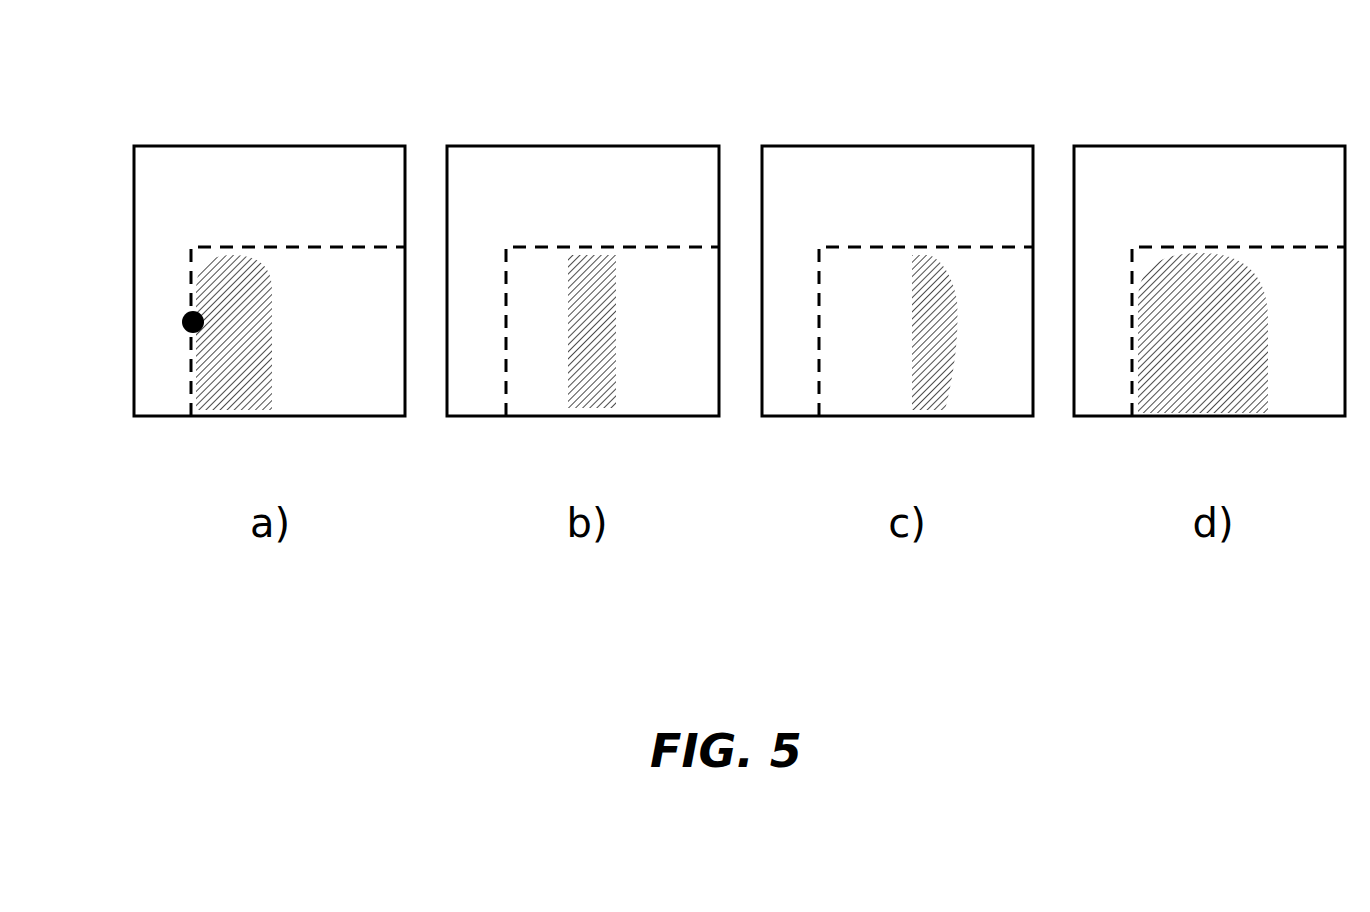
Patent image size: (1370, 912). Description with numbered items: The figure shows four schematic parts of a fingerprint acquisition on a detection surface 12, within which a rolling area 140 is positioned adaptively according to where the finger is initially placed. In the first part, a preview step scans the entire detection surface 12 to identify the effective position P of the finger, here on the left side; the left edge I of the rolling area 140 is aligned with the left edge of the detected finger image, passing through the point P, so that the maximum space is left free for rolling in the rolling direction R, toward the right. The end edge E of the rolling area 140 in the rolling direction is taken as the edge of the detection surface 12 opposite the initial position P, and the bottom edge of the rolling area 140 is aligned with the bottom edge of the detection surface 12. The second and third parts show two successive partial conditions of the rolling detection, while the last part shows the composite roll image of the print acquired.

The detection surface 12 is at (160, 163).
The rolling area 140 is at (293, 243).
The effective position of the finger P is at (183, 330).
The rolling direction R is at (257, 308).
The left edge of the rolling area I is at (190, 400).
The end edge of the rolling area E is at (402, 322).